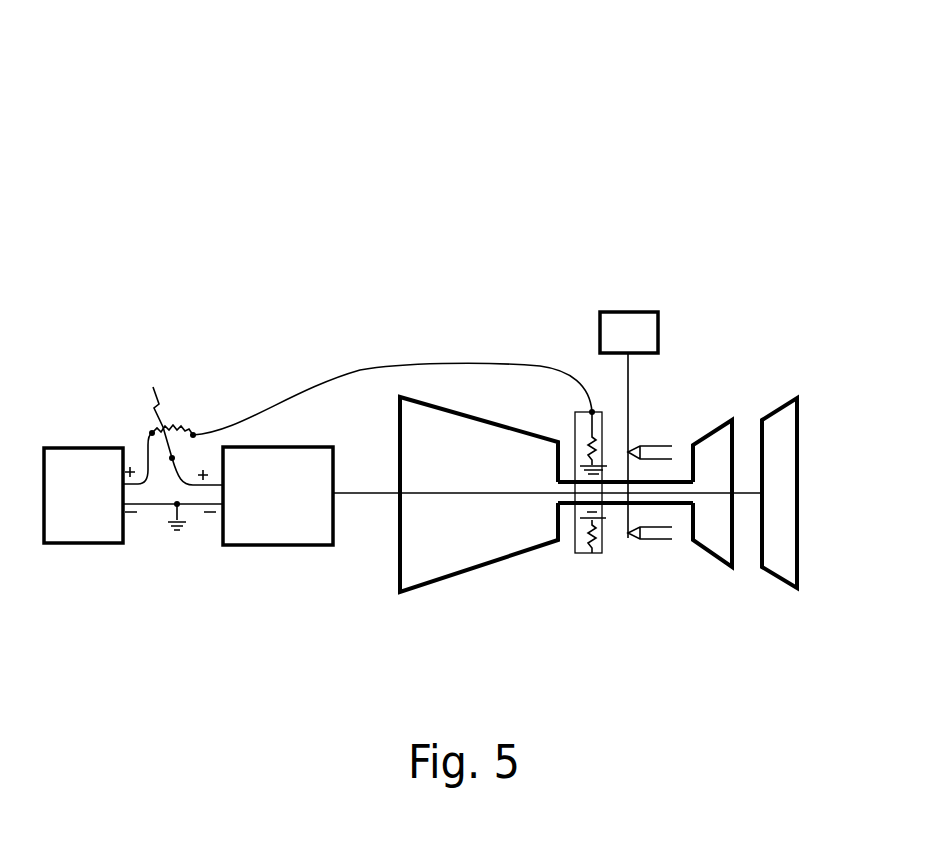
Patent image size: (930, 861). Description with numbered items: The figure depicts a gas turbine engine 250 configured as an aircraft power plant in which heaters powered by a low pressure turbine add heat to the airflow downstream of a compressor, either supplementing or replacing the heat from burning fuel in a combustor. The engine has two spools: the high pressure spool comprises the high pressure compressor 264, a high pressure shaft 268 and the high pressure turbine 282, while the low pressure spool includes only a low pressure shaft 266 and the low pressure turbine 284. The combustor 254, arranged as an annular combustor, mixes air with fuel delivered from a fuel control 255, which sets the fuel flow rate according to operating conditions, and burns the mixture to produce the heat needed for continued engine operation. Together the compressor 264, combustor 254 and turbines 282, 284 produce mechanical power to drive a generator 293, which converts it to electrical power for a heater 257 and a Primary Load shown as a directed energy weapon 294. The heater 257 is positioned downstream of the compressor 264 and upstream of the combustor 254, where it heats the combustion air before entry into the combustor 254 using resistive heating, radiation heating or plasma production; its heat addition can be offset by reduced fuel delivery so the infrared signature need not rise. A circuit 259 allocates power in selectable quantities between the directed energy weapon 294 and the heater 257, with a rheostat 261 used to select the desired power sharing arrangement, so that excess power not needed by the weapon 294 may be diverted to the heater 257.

The gas turbine engine 250 is at (502, 199).
The combustor 254 is at (676, 386).
The fuel control 255 is at (635, 311).
The heater 257 is at (590, 555).
The circuit 259 is at (206, 367).
The rheostat 261 is at (150, 411).
The high pressure compressor 264 is at (432, 405).
The low pressure shaft 266 is at (747, 495).
The high pressure shaft 268 is at (681, 506).
The high pressure turbine 282 is at (715, 425).
The low pressure turbine 284 is at (785, 398).
The generator 293 is at (280, 546).
The directed energy weapon 294 is at (90, 545).